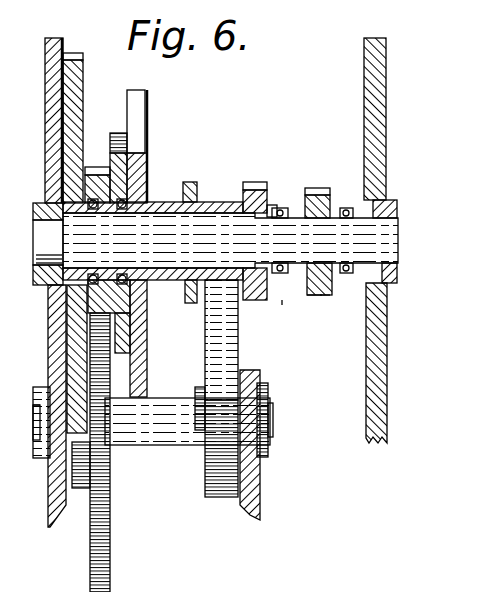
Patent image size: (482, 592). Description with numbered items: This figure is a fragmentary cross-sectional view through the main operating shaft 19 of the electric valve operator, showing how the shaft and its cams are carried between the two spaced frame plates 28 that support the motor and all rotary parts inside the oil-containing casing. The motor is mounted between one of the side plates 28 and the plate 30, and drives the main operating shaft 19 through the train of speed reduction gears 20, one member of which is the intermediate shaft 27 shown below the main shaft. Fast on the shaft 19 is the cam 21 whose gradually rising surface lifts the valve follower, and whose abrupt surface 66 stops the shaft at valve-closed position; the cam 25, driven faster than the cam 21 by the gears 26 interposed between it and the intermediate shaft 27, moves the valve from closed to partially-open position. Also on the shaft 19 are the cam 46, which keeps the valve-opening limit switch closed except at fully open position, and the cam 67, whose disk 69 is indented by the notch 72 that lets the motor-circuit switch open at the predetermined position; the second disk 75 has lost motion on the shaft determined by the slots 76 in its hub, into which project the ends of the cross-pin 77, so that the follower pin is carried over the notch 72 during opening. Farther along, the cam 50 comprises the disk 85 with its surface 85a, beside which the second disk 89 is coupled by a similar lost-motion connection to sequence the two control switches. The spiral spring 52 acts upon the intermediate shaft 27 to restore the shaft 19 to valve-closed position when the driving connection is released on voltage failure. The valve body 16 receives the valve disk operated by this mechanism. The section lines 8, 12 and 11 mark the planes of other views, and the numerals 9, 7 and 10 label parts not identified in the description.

The valve body 16 is at (31, 117).
The gears 26 is at (57, 140).
The bearing housing 9 is at (31, 236).
The frame member 7 is at (20, 374).
The frame member 10 is at (20, 409).
The spring 52 is at (215, 356).
The cam 25 is at (97, 167).
The abrupt surface 66 is at (143, 143).
The cam 21 is at (149, 173).
The cam 46 is at (190, 182).
The notch 72 is at (250, 182).
The cam 67 is at (264, 190).
The second disk 75 is at (267, 192).
The cross-pin 77 is at (290, 212).
The second disk 89 is at (335, 193).
The main operating shaft 19 is at (388, 276).
The frame plates 28 is at (55, 478).
The intermediate shaft 27 is at (187, 435).
The speed reduction gears 20 is at (73, 496).
The disk 69 is at (240, 310).
The plate 30 is at (253, 497).
The section line 8 is at (150, 130).
The section line 12 is at (290, 205).
The section line 11 is at (350, 205).
The slots 76 is at (273, 314).
The cam 50 is at (326, 302).
The surface 85a is at (310, 298).
The disk 85 is at (318, 298).